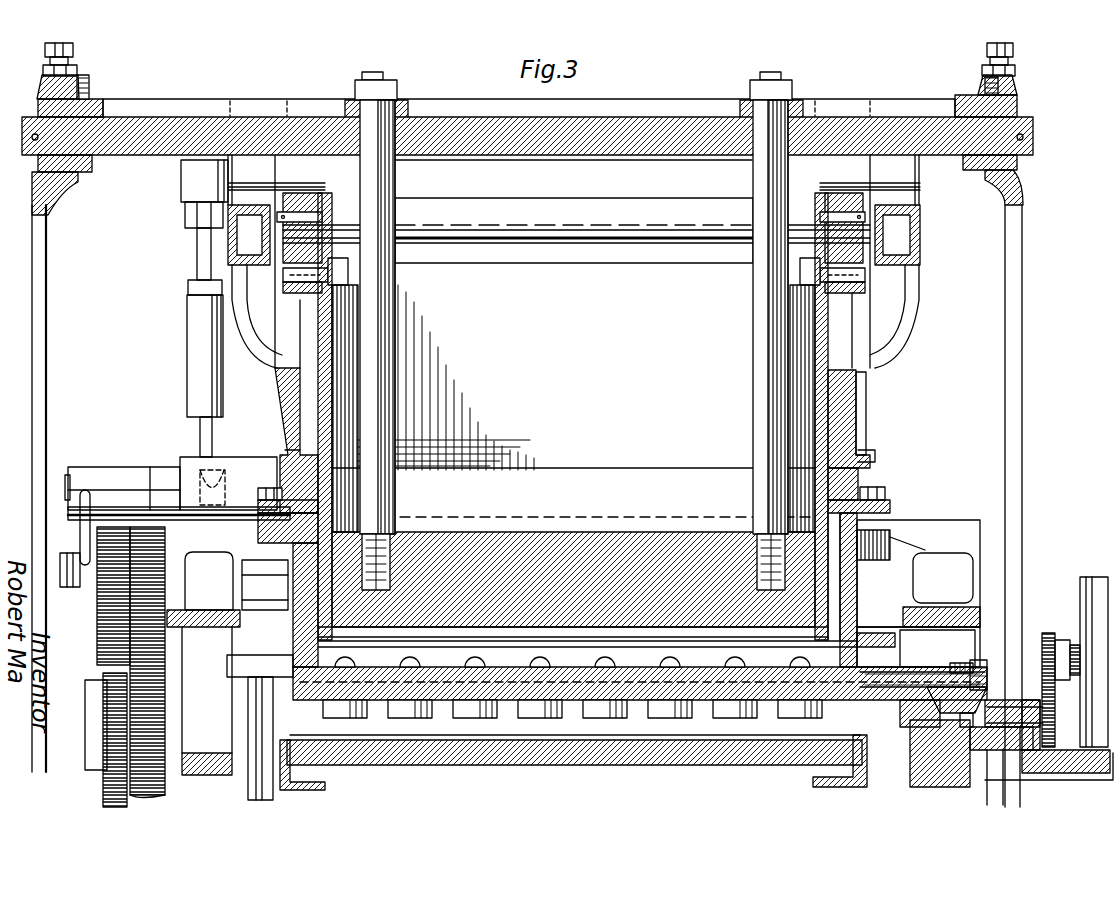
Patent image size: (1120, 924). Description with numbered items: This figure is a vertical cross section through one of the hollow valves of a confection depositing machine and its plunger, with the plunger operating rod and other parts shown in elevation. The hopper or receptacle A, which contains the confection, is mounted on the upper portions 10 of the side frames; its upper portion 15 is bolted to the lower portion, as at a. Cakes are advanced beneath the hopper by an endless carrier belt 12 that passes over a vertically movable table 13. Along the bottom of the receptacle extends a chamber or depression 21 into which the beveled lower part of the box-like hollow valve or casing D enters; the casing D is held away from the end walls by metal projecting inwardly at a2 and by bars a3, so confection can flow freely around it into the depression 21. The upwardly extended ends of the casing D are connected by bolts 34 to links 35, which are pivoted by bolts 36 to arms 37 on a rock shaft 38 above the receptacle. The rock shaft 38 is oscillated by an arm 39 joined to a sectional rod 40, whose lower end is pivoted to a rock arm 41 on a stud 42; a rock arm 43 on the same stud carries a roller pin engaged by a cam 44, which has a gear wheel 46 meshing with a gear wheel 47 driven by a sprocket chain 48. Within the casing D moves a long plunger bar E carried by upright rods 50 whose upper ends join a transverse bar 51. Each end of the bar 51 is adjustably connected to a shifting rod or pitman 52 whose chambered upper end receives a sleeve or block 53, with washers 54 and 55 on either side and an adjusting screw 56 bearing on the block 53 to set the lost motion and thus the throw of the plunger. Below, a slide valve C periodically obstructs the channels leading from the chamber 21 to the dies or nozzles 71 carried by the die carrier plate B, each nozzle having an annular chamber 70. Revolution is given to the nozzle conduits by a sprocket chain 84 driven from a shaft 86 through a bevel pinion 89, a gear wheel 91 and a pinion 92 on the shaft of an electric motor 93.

The transverse bar 51 is at (667, 128).
The shifting rod or pitman 52 is at (86, 100).
The sleeve or block 53 is at (1017, 108).
The washer 54 is at (72, 190).
The washer 55 is at (38, 165).
The adjusting screw 56 is at (73, 51).
The arm 39 is at (204, 194).
The sectional rod 40 is at (196, 271).
The arm 37 is at (300, 210).
The bolt 36 is at (322, 216).
The link 35 is at (302, 252).
The rock shaft 38 is at (632, 194).
The bolt 34 is at (335, 291).
The hopper or receptacle A is at (268, 407).
The bar a3 is at (605, 510).
The plunger bar E is at (512, 535).
The upright rod 50 is at (395, 323).
The hollow valve or casing D is at (830, 398).
The upper portion of receptacle 15 is at (866, 427).
The inward projection of end wall a2 is at (300, 460).
The bolt a is at (270, 488).
The chamber or depression 21 is at (675, 650).
The die or nozzle 71 is at (365, 713).
The endless carrier belt 12 is at (523, 744).
The vertically movable table 13 is at (622, 744).
The rock arm 41 is at (162, 470).
The stud or shaft 42 is at (66, 494).
The rock arm 43 is at (82, 547).
The cam 44 is at (97, 632).
The gear wheel 46 is at (172, 553).
The sprocket chain 48 is at (103, 802).
The gear wheel 47 is at (152, 794).
The slide valve C is at (230, 676).
The upper portion of side frame 10 is at (208, 776).
The annular chamber 70 is at (912, 785).
The die carrier plate B is at (938, 752).
The shaft 86 is at (935, 685).
The sprocket chain 84 is at (973, 676).
The bevel pinion 89 is at (988, 780).
The gear wheel 91 is at (1070, 740).
The pinion 92 is at (1049, 633).
The electric motor 93 is at (1091, 662).